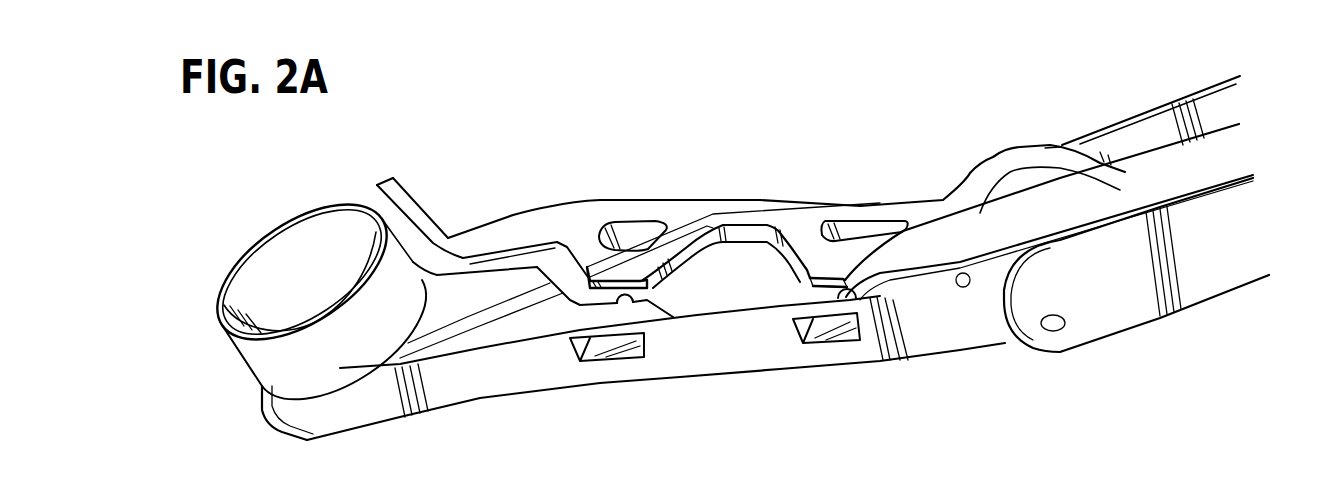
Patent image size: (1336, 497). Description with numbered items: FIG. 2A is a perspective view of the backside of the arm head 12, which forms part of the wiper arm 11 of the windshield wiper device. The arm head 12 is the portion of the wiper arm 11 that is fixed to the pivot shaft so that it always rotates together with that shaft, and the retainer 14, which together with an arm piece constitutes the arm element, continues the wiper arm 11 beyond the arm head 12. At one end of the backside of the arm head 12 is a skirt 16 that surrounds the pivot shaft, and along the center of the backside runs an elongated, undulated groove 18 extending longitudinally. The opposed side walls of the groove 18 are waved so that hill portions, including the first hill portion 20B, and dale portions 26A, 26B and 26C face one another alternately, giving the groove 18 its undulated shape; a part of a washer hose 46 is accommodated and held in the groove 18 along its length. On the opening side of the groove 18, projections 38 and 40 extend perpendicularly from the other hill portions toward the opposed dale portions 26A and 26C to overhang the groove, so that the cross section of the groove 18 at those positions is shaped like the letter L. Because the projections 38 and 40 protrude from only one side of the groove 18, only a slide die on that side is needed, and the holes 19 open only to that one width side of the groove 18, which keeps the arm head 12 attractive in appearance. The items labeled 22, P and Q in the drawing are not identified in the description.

The wiper arm 11 is at (859, 122).
The arm head 12 is at (545, 205).
The retainer 14 is at (1159, 100).
The skirt 16 is at (287, 222).
The groove 18 is at (783, 262).
The holes 19 is at (605, 350).
The first hill portion 20B is at (727, 260).
The flange 22 is at (1121, 120).
The second dale portion 26A is at (640, 302).
The first dale portion 26B is at (751, 232).
The third dale portion 26C is at (866, 330).
The projection 38 is at (605, 294).
The projection 40 is at (820, 292).
The washer hose 46 is at (421, 226).
The point P is at (606, 300).
The point Q is at (820, 300).